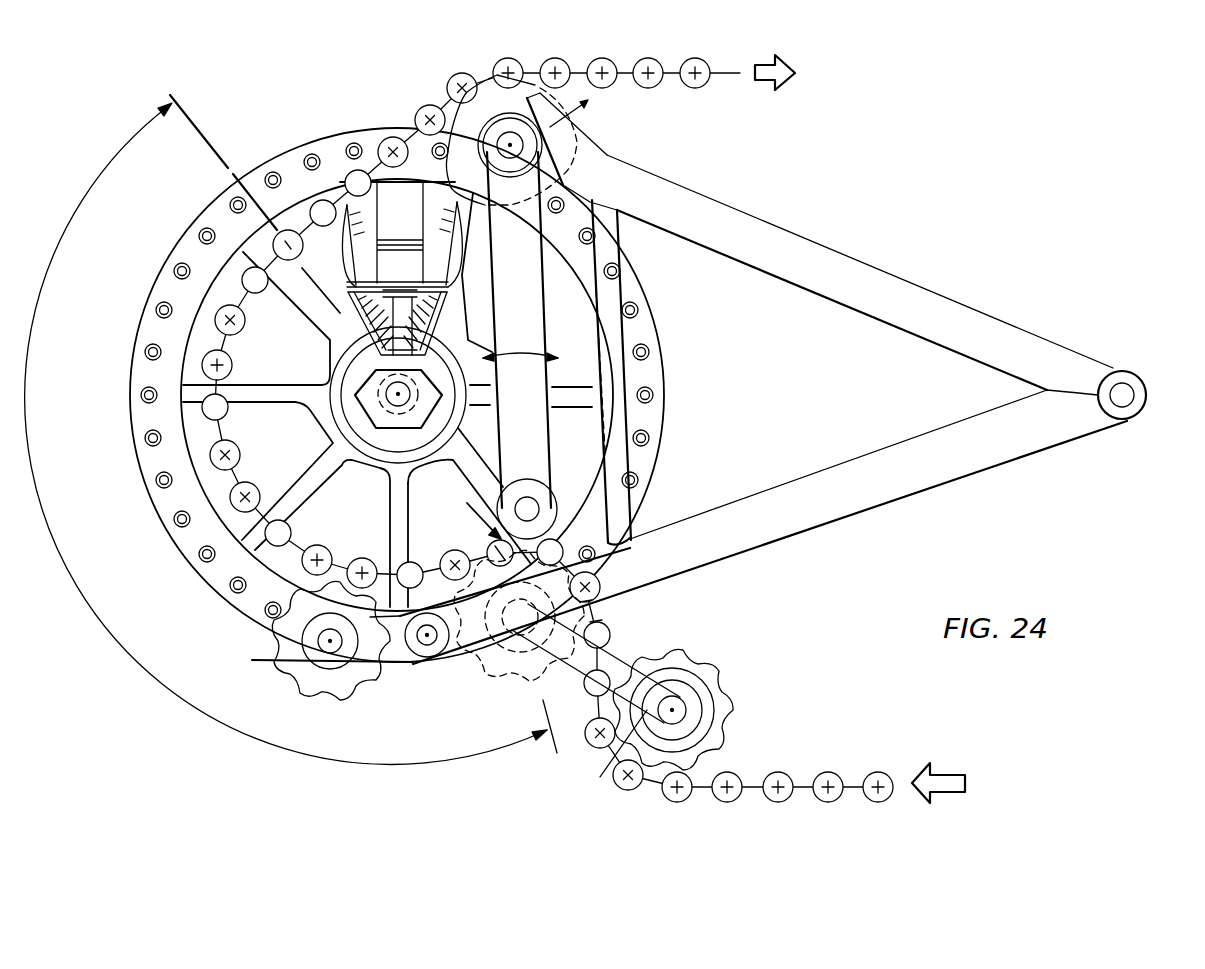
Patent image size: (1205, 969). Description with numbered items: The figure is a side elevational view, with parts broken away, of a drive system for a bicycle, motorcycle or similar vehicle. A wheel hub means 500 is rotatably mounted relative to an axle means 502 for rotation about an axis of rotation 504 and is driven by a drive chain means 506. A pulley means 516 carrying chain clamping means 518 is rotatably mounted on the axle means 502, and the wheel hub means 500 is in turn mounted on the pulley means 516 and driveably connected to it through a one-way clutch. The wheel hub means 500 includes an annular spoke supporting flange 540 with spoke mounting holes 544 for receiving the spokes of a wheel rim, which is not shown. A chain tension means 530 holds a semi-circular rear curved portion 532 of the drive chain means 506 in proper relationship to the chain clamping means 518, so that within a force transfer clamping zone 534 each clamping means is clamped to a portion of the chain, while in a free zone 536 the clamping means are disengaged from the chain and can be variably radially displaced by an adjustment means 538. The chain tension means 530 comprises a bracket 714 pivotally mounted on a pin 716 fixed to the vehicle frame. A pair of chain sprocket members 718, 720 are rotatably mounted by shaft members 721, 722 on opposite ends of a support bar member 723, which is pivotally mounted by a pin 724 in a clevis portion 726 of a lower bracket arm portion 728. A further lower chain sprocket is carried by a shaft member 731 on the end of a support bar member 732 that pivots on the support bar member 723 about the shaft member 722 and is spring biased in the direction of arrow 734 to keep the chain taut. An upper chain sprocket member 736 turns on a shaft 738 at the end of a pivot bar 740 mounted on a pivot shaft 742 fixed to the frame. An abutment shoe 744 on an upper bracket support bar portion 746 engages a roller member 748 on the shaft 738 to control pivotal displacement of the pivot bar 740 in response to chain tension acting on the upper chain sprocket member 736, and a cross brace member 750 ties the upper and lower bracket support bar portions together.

The wheel hub means 500 is at (680, 394).
The axle means 502 is at (398, 425).
The axis of rotation 504 is at (395, 396).
The drive chain means 506 is at (716, 95).
The pulley means 516 is at (172, 410).
The chain clamping means 518 is at (400, 272).
The chain tension means 530 is at (684, 620).
The semi-circular rear curved portion 532 is at (338, 430).
The force transfer clamping zone 534 is at (98, 618).
The free zone 536 is at (510, 530).
The adjustment means 538 is at (360, 348).
The annular spoke supporting flange 540 is at (152, 330).
The spoke mounting holes 544 is at (178, 272).
The bracket 714 is at (935, 438).
The pin 716 is at (1146, 393).
The chain sprocket member 718 is at (325, 643).
The chain sprocket member 720 is at (592, 612).
The shaft member 721 is at (300, 675).
The shaft member 722 is at (518, 635).
The support bar member 723 is at (372, 695).
The pin 724 is at (427, 648).
The clevis portion 726 is at (470, 665).
The lower bracket arm portion 728 is at (882, 497).
The shaft member 731 is at (760, 682).
The support bar member 732 is at (596, 705).
The arrow 734 is at (735, 762).
The upper chain sprocket member 736 is at (440, 108).
The shaft 738 is at (510, 160).
The pivot bar 740 is at (430, 222).
The pivot shaft 742 is at (527, 497).
The abutment shoe 744 is at (632, 137).
The upper bracket support bar portion 746 is at (845, 262).
The roller member 748 is at (500, 130).
The cross brace member 750 is at (615, 246).